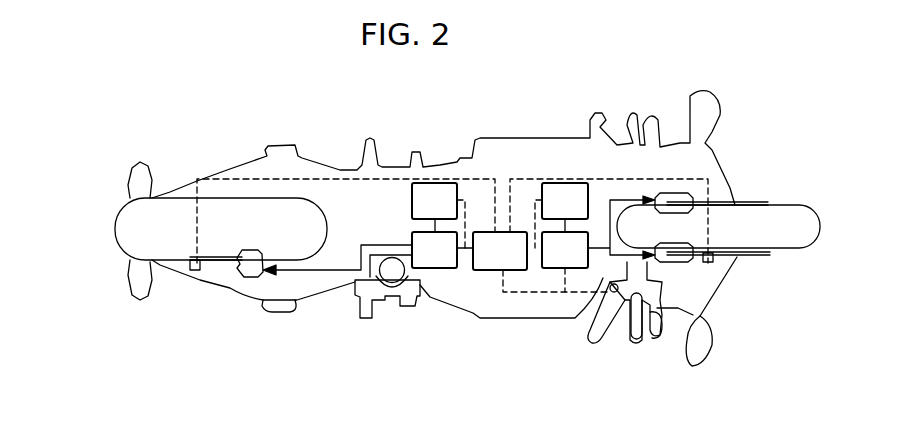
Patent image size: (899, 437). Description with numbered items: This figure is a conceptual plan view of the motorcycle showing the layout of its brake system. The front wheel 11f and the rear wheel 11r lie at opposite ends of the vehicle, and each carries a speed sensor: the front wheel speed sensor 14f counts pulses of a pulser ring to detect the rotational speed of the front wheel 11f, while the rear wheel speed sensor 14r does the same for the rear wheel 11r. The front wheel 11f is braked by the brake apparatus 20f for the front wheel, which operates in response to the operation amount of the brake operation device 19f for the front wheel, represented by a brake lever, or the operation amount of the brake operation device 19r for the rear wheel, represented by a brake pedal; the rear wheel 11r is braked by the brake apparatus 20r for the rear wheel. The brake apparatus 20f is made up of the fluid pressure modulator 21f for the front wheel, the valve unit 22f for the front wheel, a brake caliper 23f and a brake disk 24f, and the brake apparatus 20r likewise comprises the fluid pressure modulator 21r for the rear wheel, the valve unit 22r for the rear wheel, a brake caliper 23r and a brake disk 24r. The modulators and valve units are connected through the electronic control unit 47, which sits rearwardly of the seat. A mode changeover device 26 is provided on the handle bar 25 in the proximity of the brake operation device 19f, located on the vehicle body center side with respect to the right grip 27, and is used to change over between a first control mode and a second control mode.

The rear wheel 11r is at (117, 236).
The front wheel 11f is at (805, 212).
The rear wheel speed sensor 14r is at (195, 267).
The front wheel speed sensor 14f is at (708, 262).
The brake operation device for the rear wheel 19r is at (393, 318).
The brake operation device for the front wheel 19f is at (642, 347).
The brake apparatus for the rear wheel 20r is at (257, 309).
The brake apparatus for the front wheel 20f is at (752, 263).
The fluid pressure modulator for the rear wheel 21r is at (443, 190).
The fluid pressure modulator for the front wheel 21f is at (563, 190).
The valve unit for the rear wheel 22r is at (440, 270).
The valve unit for the front wheel 22f is at (553, 270).
The brake caliper 23r is at (250, 278).
The brake caliper 23f is at (680, 195).
The brake disk 24r is at (222, 262).
The brake disk 24f is at (737, 202).
The handle bar 25 is at (666, 294).
The mode changeover device 26 is at (578, 320).
The right grip 27 is at (600, 320).
The electronic control unit 47 is at (485, 270).